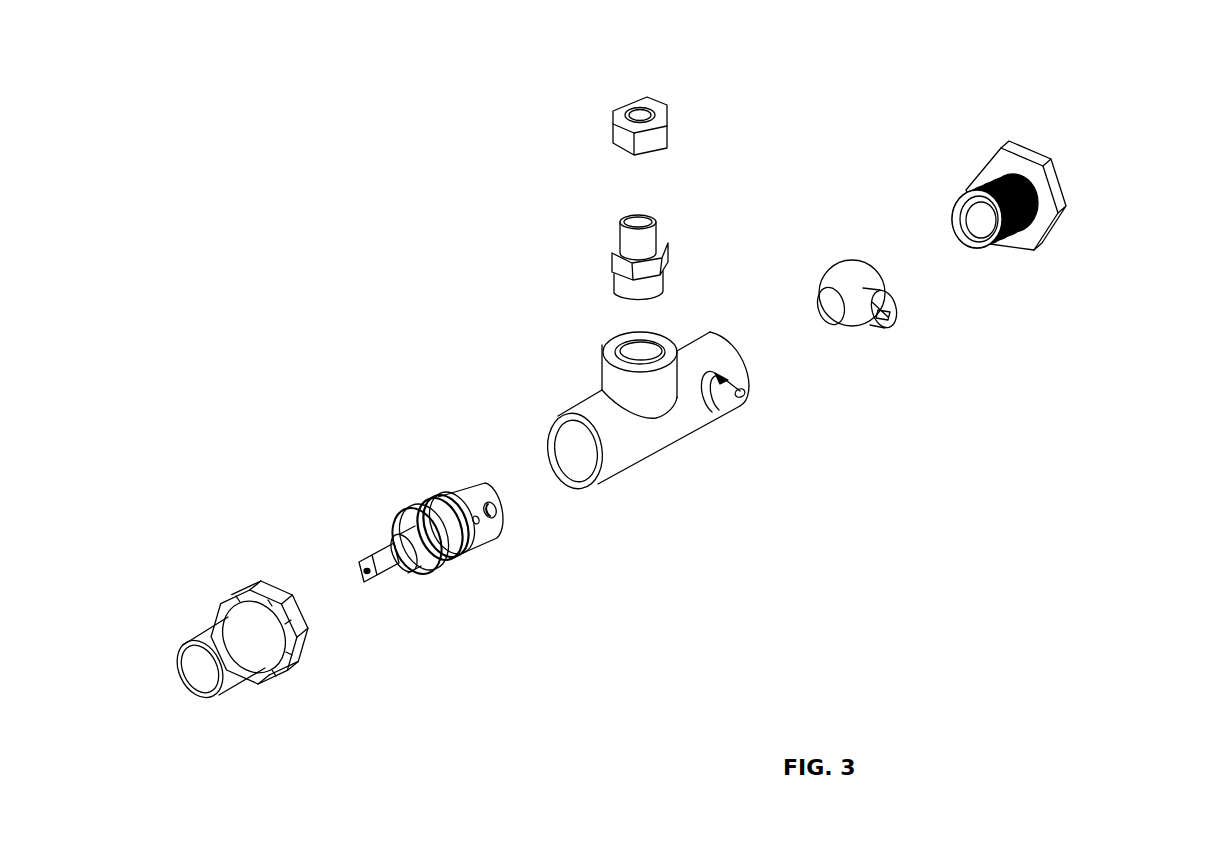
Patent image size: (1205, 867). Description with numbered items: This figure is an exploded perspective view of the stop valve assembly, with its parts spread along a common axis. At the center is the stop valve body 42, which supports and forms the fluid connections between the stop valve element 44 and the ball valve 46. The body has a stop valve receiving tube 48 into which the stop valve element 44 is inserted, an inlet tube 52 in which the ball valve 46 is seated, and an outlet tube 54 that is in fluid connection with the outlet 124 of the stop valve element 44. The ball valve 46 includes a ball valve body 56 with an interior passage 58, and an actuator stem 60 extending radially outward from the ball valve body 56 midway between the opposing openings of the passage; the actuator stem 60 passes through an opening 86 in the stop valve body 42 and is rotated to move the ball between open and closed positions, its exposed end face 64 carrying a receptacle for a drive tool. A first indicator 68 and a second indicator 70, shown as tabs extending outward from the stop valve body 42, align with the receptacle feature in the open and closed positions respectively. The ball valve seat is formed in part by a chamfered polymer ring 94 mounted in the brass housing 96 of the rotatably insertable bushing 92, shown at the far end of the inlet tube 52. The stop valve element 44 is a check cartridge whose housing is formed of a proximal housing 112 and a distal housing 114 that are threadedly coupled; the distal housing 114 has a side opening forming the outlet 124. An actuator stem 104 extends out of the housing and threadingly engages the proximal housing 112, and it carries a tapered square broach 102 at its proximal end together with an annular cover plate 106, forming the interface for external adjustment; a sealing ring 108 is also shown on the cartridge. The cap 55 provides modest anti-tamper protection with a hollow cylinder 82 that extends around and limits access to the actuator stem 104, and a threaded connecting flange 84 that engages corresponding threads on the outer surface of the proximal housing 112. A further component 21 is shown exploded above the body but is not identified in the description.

The fitting 21 is at (585, 233).
The stop valve body 42 is at (648, 450).
The stop valve element 44 is at (449, 455).
The ball valve 46 is at (853, 218).
The stop valve receiving tube 48 is at (617, 462).
The inlet tube 52 is at (700, 353).
The outlet tube 54 is at (613, 382).
The cap 55 is at (246, 717).
The ball valve body 56 is at (830, 260).
The interior passage 58 is at (833, 297).
The actuator stem 60 is at (892, 308).
The end face 64 is at (887, 327).
The first indicator 68 is at (745, 397).
The second indicator 70 is at (745, 388).
The hollow cylinder 82 is at (230, 662).
The connecting flange 84 is at (295, 635).
The opening 86 is at (718, 415).
The bushing 92 is at (1068, 98).
The chamfered polymer ring 94 is at (995, 245).
The brass housing 96 is at (983, 155).
The tapered square broach 102 is at (385, 572).
The actuator stem 104 is at (403, 550).
The annular cover plate 106 is at (430, 573).
The sealing ring 108 is at (405, 517).
The proximal housing 112 is at (433, 507).
The distal housing 114 is at (463, 543).
The outlet 124 is at (500, 530).